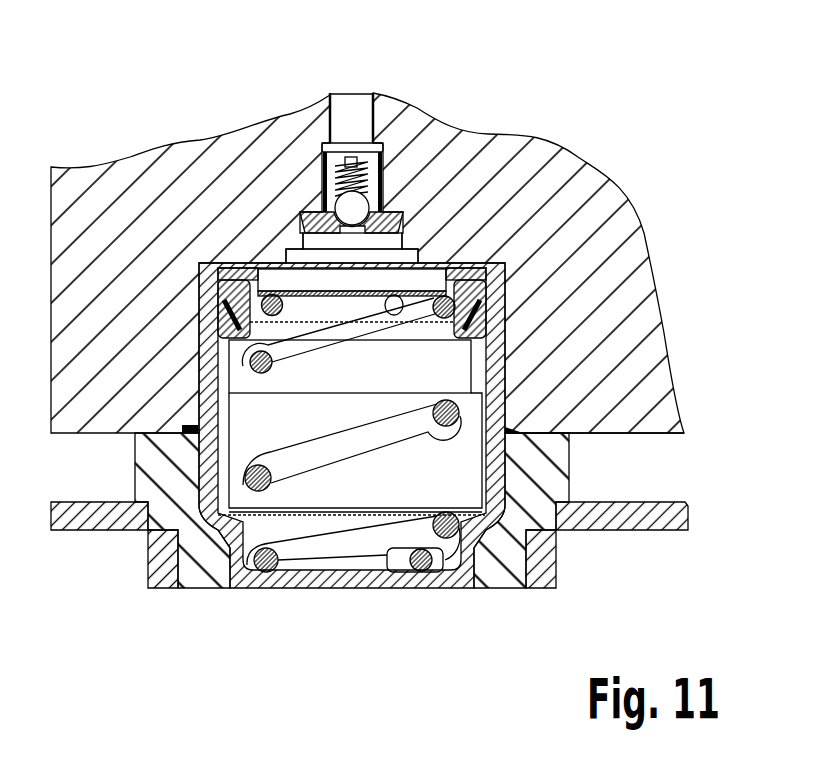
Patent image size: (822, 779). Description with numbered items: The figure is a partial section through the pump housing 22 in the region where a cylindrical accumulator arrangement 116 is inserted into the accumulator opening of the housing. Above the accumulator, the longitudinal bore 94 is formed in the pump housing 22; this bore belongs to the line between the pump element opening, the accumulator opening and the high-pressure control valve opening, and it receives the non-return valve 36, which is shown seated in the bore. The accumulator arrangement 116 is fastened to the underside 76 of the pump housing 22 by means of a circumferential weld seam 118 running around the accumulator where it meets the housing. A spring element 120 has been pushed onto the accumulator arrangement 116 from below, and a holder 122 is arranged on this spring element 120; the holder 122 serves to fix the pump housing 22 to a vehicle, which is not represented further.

The pump housing 22 is at (608, 193).
The non-return valve 36 is at (355, 206).
The underside 76 is at (649, 436).
The longitudinal bore 94 is at (390, 102).
The accumulator arrangement 116 is at (359, 540).
The circumferential weld seam 118 is at (508, 430).
The spring element 120 is at (504, 565).
The holder 122 is at (648, 523).